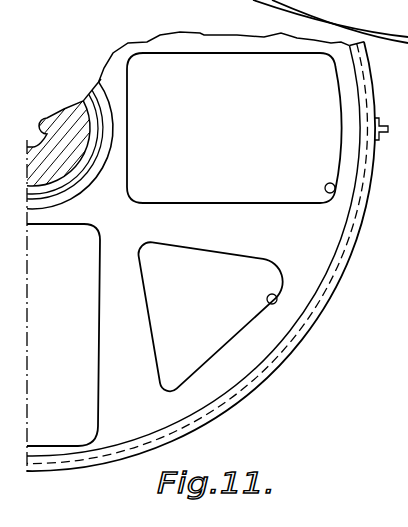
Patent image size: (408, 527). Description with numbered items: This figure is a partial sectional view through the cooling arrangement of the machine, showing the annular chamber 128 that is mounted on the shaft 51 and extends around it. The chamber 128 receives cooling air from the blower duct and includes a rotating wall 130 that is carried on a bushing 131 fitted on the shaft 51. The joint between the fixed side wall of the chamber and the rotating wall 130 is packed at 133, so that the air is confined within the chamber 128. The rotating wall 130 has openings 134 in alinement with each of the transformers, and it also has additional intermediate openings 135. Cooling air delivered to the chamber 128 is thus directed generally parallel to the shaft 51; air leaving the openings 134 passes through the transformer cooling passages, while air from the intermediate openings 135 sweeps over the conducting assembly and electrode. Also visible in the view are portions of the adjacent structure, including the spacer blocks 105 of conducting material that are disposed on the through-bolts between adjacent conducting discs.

The shaft 51 is at (62, 112).
The spacer blocks 105 is at (340, 18).
The annular chamber 128 is at (213, 34).
The rotating wall 130 is at (320, 240).
The bushing 131 is at (94, 122).
The packing 133 is at (356, 61).
The openings 134 is at (336, 194).
The intermediate openings 135 is at (272, 301).